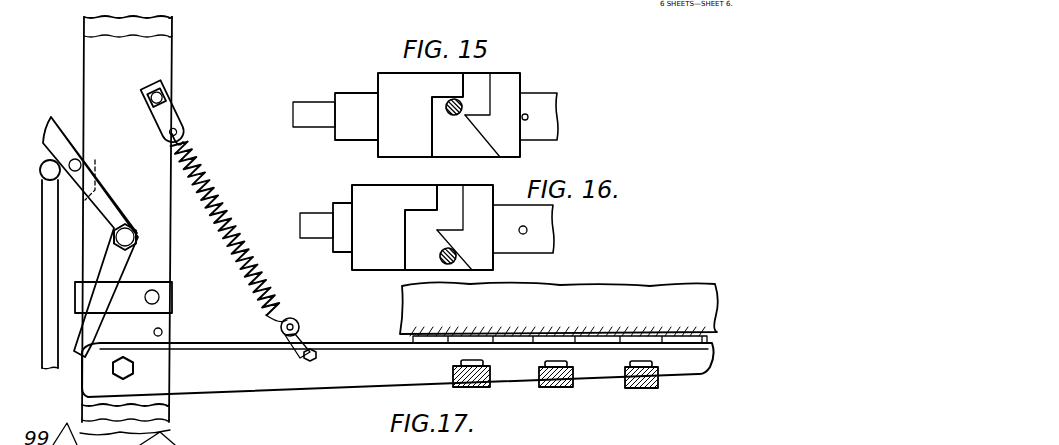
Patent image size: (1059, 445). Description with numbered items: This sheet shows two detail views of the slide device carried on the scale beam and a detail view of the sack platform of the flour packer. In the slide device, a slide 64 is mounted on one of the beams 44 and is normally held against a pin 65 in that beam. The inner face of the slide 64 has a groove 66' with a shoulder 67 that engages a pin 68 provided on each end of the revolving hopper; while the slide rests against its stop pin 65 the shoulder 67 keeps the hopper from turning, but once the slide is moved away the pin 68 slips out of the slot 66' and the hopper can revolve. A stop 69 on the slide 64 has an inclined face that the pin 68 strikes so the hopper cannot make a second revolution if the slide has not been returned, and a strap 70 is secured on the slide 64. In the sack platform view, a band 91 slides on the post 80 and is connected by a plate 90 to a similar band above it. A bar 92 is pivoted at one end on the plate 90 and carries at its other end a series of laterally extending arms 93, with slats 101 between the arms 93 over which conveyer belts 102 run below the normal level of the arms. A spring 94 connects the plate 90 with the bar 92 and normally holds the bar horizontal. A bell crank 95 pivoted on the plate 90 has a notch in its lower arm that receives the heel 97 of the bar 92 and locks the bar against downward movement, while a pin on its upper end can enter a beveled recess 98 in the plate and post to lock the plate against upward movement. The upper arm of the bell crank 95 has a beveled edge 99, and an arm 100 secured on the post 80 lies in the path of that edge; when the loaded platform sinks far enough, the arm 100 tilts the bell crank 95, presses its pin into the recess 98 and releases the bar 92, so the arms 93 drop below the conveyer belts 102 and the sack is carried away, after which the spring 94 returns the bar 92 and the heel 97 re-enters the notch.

In FIG. 15, the beam 44 is at (543, 98).
In FIG. 16, the beam 44 is at (546, 243).
In FIG. 15, the slide 64 is at (449, 115).
In FIG. 16, the slide 64 is at (422, 227).
In FIG. 15, the pin 65 is at (528, 117).
In FIG. 16, the pin 65 is at (528, 230).
In FIG. 15, the groove 66' is at (464, 127).
In FIG. 16, the groove 66' is at (437, 226).
In FIG. 15, the shoulder 67 is at (447, 115).
In FIG. 16, the shoulder 67 is at (430, 205).
In FIG. 15, the pin 68 is at (459, 103).
In FIG. 16, the pin 68 is at (445, 259).
In FIG. 15, the stop 69 is at (485, 143).
In FIG. 16, the stop 69 is at (460, 256).
In FIG. 15, the strap 70 is at (317, 123).
In FIG. 16, the strap 70 is at (315, 238).
In FIG. 17, the post 80 is at (170, 28).
In FIG. 17, the plate 90 is at (93, 237).
In FIG. 17, the band 91 is at (160, 285).
In FIG. 17, the bar 92 is at (398, 370).
In FIG. 17, the arms 93 is at (512, 341).
In FIG. 17, the spring 94 is at (247, 285).
In FIG. 17, the bell crank 95 is at (104, 202).
In FIG. 17, the heel 97 is at (99, 330).
In FIG. 17, the recess 98 is at (95, 163).
In FIG. 17, the beveled edge 99 is at (44, 139).
In FIG. 17, the arm 100 is at (41, 248).
In FIG. 17, the slats 101 is at (556, 385).
In FIG. 17, the conveyer belts 102 is at (566, 363).